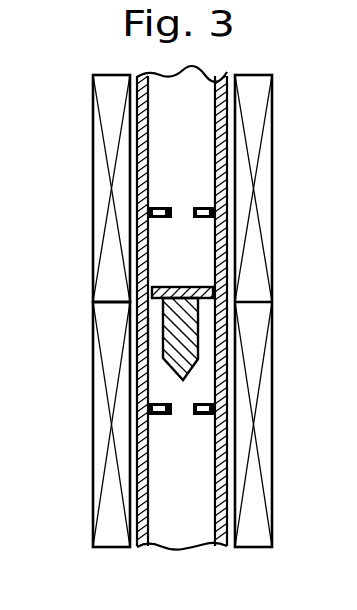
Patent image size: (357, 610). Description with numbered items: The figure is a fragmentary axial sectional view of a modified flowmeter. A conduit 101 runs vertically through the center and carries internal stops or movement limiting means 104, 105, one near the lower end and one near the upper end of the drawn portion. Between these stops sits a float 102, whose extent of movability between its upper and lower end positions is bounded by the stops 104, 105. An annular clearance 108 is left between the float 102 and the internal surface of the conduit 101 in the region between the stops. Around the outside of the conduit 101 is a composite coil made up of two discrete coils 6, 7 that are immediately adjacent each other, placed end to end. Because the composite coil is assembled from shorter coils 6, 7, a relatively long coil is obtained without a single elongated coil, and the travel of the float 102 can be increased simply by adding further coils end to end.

The coil 6 is at (100, 170).
The coil 7 is at (100, 393).
The conduit 101 is at (147, 243).
The float 102 is at (187, 287).
The internal stop 104 is at (165, 416).
The internal stop 105 is at (165, 208).
The annular clearance 108 is at (152, 332).